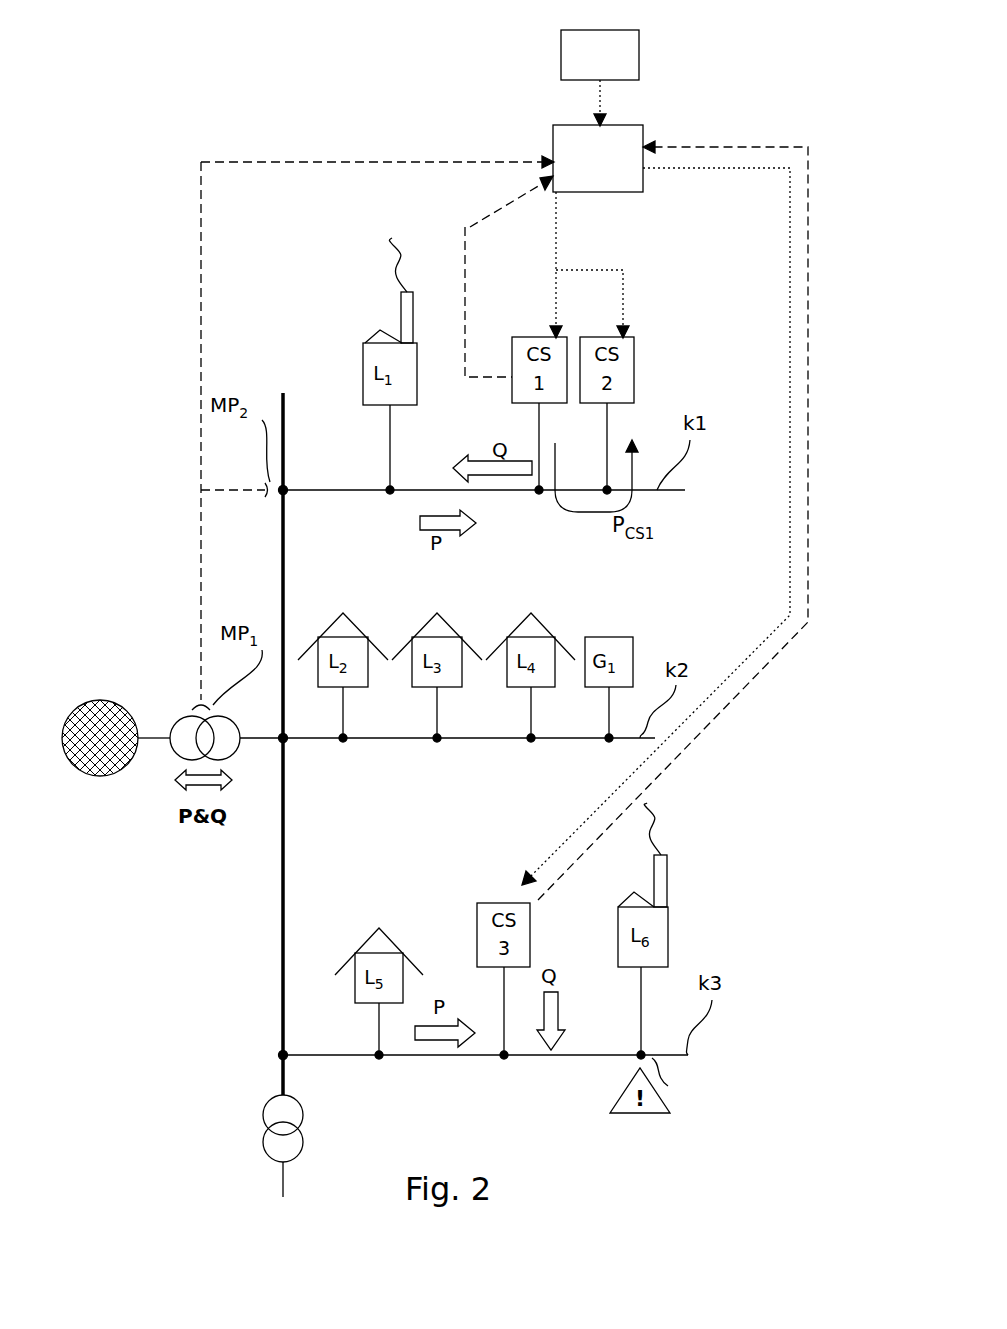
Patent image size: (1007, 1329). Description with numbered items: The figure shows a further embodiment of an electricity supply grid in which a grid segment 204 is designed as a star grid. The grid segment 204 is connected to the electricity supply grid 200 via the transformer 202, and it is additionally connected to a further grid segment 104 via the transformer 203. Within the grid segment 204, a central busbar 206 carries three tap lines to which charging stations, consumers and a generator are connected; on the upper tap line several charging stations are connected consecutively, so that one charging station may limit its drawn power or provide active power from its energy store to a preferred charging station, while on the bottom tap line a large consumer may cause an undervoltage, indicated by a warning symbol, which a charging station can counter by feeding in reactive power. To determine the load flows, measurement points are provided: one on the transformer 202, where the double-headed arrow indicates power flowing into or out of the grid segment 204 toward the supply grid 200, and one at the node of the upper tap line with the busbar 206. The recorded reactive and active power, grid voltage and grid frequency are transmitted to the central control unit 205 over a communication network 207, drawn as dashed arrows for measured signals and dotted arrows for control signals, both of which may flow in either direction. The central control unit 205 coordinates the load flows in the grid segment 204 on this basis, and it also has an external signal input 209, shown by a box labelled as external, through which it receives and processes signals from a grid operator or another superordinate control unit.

The grid segment 104 is at (283, 1183).
The electricity supply grid 200 is at (108, 702).
The transformer 202 is at (178, 751).
The transformer 203 is at (272, 1097).
The grid segment 204 is at (736, 103).
The central control unit 205 is at (640, 125).
The busbar 206 is at (283, 393).
The communication network 207 is at (808, 423).
The external signal input 209 is at (561, 46).